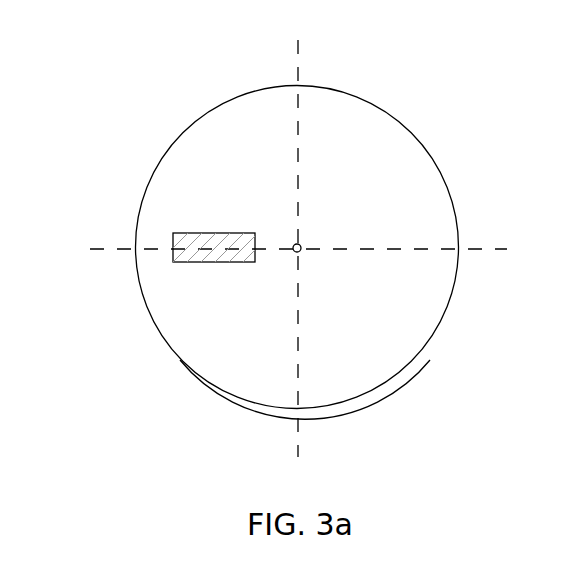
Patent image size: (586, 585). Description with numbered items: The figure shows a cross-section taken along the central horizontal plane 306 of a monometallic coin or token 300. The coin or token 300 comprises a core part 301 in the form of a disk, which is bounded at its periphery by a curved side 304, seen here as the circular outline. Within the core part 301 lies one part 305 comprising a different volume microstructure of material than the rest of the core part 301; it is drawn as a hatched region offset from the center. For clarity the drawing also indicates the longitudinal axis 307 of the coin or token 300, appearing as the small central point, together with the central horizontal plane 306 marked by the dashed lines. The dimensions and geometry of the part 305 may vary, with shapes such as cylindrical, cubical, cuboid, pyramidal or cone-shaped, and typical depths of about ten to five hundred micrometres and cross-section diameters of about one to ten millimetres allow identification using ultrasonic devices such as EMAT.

The monometallic coin or token 300 is at (262, 67).
The core part 301 is at (347, 120).
The curved side 304 is at (405, 368).
The part comprising a different volume microstructure of material 305 is at (190, 263).
The central horizontal plane 306 is at (267, 228).
The longitudinal axis 307 is at (308, 239).